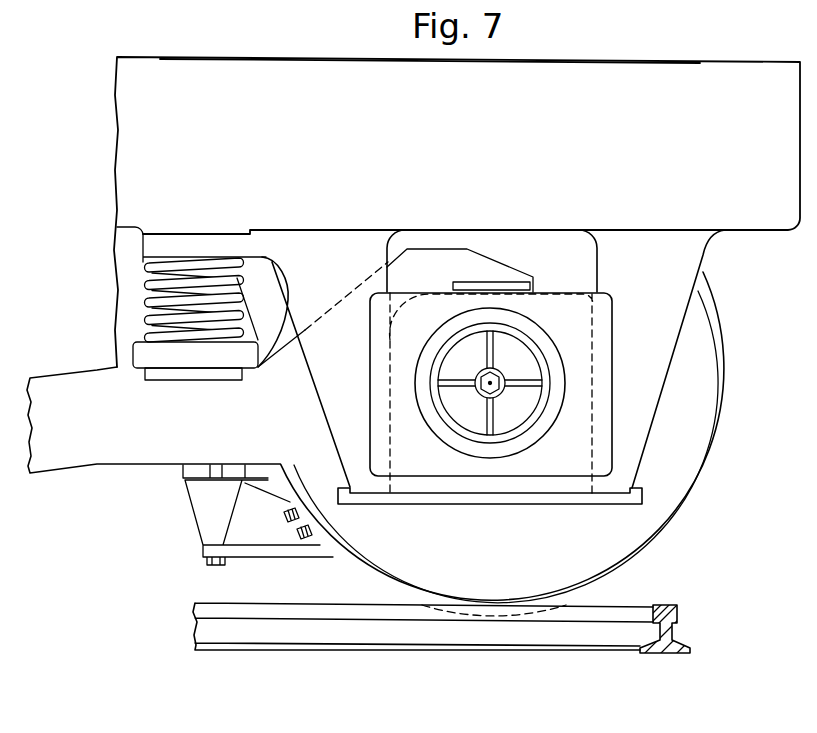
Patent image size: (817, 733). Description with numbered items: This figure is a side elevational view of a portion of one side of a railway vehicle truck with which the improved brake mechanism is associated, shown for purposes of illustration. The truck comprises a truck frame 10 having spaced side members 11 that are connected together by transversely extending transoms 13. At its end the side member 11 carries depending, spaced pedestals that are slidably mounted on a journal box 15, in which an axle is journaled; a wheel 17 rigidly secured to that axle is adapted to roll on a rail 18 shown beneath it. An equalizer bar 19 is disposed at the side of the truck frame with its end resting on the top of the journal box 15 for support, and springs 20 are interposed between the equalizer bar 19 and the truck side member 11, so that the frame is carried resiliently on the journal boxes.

The truck frame 10 is at (523, 61).
The side members 11 is at (320, 78).
The transoms 13 is at (131, 250).
The journal boxes 15 is at (578, 418).
The wheels 17 is at (660, 503).
The rails 18 is at (663, 607).
The equalizer bar 19 is at (77, 453).
The springs 20 is at (148, 297).